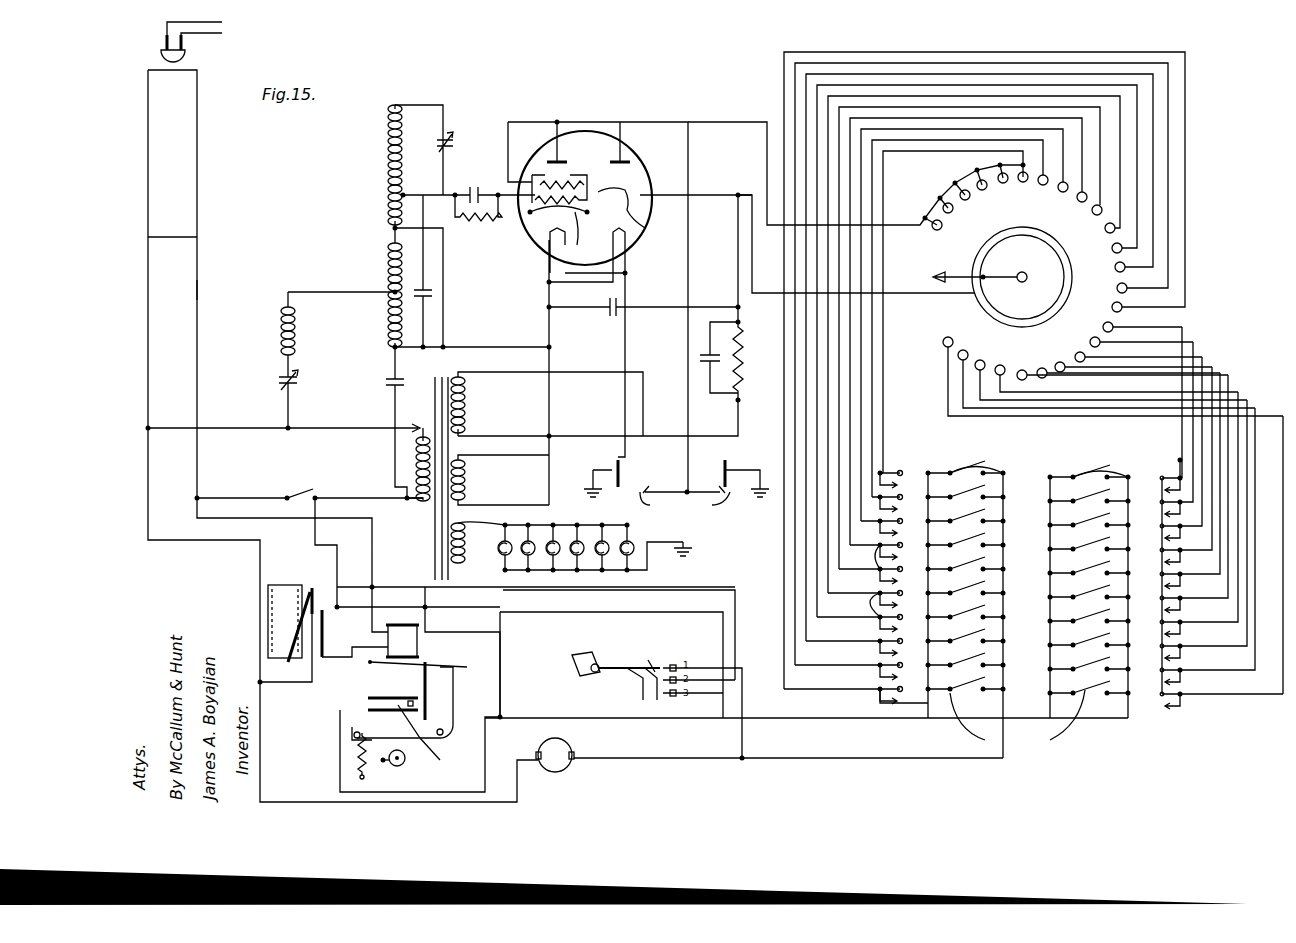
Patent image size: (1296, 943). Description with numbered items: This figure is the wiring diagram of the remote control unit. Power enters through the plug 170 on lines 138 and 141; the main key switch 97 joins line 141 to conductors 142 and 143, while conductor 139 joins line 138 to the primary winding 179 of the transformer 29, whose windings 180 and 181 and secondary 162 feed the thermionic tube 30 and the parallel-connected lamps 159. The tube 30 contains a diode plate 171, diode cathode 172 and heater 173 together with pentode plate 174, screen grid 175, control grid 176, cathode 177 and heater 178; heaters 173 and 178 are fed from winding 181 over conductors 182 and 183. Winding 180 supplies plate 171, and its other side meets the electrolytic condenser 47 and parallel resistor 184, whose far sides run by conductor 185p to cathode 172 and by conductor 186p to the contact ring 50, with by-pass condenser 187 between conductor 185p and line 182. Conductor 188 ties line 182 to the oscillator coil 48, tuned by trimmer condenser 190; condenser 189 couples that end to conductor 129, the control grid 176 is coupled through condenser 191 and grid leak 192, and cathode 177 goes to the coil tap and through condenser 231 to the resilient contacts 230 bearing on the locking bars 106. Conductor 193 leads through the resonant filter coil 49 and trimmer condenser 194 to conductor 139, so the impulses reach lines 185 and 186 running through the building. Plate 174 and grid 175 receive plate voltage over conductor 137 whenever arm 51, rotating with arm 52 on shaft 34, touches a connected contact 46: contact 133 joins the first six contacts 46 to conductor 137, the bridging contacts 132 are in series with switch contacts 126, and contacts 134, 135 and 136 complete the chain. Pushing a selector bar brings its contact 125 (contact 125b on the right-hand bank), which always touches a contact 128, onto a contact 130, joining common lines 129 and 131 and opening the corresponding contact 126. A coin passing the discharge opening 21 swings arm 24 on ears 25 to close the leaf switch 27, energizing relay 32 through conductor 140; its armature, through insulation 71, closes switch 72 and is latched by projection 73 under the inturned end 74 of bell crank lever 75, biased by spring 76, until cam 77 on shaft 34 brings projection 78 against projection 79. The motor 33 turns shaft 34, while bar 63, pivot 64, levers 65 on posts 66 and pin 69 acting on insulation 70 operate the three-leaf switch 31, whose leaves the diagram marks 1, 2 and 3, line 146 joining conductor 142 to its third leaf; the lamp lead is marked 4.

The motor circuit conductor 1 is at (602, 767).
The switch contact conductor 2 is at (591, 709).
The control unit 3 is at (806, 663).
The lamp circuit conductor 4 is at (603, 584).
The discharge opening 21 is at (262, 578).
The light arm 24 is at (300, 648).
The ears 25 is at (535, 592).
The leaf switch 27 is at (312, 685).
The transformer 29 is at (418, 428).
The thermionic tube 30 is at (578, 135).
The three-pole switch 31 is at (700, 658).
The relay 32 is at (437, 653).
The motor 33 is at (556, 772).
The shaft 34 is at (415, 770).
The contacts 46 is at (984, 198).
The electrolytic condenser 47 is at (708, 380).
The shielded oscillator coil 48 is at (392, 196).
The shielded resonant filter coil 49 is at (282, 332).
The contact ring 50 is at (1005, 322).
The arm 51 is at (968, 272).
The arm 52 is at (1018, 284).
The bar 63 is at (630, 709).
The pivot 64 is at (661, 709).
The levers 65 is at (590, 655).
The posts 66 is at (588, 674).
The pin 69 is at (625, 672).
The strip of insulation 70 is at (618, 662).
The strip of insulation 71 is at (416, 698).
The leaf switch 72 is at (425, 733).
The projection 73 is at (440, 668).
The inwardly turned projection 74 is at (430, 666).
The bell crank lever 75 is at (453, 705).
The spring 76 is at (356, 757).
The cam member 77 is at (396, 767).
The projection 78 is at (383, 762).
The projection 79 is at (420, 755).
The switch 97 is at (300, 490).
The locking bar 106 is at (622, 473).
The contacts 125 is at (617, 627).
The contacts 125b is at (1073, 470).
The contacts 126 is at (883, 473).
The contacts 128 is at (940, 460).
The common line 129 is at (845, 718).
The contacts 130 is at (1073, 570).
The common line 131 is at (905, 760).
The bridging contacts 132 is at (878, 558).
The contact 133 is at (883, 455).
The contact 134 is at (880, 703).
The contact 135 is at (1178, 462).
The contact 136 is at (1176, 700).
The conductor 137 is at (748, 122).
The power line 138 is at (197, 237).
The conductor 139 is at (246, 428).
The conductor 140 is at (372, 565).
The power line 141 is at (197, 287).
The conductor 142 is at (337, 568).
The conductor 143 is at (350, 498).
The line 146 is at (530, 612).
The lamps 159 is at (528, 525).
The secondary winding 162 is at (480, 525).
The plug 170 is at (203, 72).
The diode plate 171 is at (630, 160).
The diode cathode 172 is at (643, 226).
The heater 173 is at (630, 260).
The plate 174 is at (552, 158).
The screen grid 175 is at (540, 180).
The control grid 176 is at (530, 214).
The cathode 177 is at (587, 234).
The heater 178 is at (540, 250).
The primary winding 179 is at (416, 441).
The winding 180 is at (465, 403).
The winding 181 is at (465, 475).
The conductor 182 is at (549, 350).
The conductor 183 is at (625, 347).
The resistor 184 is at (742, 360).
The line 185 is at (215, 22).
The conductor 185p is at (752, 262).
The line 186 is at (205, 33).
The conductor 186p is at (960, 297).
The by-pass condenser 187 is at (610, 316).
The conductor 188 is at (482, 341).
The condenser 189 is at (380, 348).
The trimmer condenser 190 is at (420, 145).
The condenser 191 is at (474, 187).
The grid leak 192 is at (473, 221).
The conductor 193 is at (333, 292).
The trimmer condenser 194 is at (300, 380).
The resilient contacts 230 is at (692, 507).
The condenser 231 is at (428, 296).